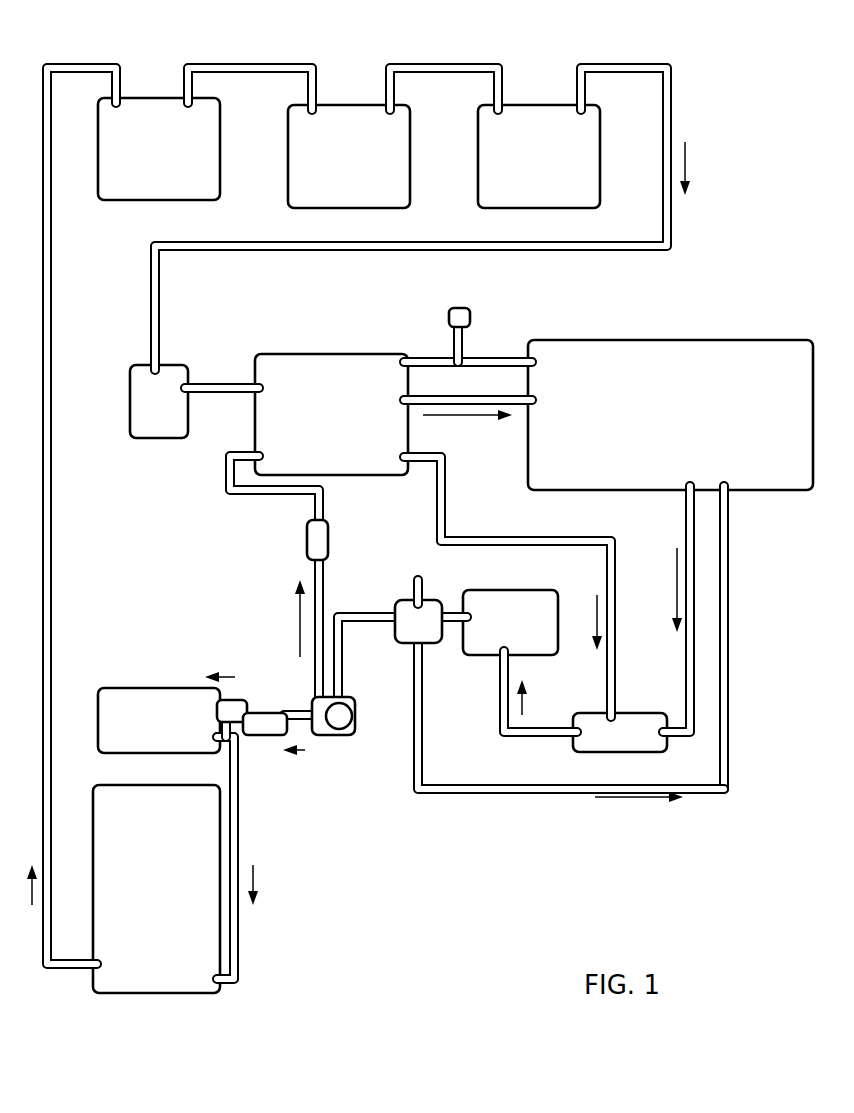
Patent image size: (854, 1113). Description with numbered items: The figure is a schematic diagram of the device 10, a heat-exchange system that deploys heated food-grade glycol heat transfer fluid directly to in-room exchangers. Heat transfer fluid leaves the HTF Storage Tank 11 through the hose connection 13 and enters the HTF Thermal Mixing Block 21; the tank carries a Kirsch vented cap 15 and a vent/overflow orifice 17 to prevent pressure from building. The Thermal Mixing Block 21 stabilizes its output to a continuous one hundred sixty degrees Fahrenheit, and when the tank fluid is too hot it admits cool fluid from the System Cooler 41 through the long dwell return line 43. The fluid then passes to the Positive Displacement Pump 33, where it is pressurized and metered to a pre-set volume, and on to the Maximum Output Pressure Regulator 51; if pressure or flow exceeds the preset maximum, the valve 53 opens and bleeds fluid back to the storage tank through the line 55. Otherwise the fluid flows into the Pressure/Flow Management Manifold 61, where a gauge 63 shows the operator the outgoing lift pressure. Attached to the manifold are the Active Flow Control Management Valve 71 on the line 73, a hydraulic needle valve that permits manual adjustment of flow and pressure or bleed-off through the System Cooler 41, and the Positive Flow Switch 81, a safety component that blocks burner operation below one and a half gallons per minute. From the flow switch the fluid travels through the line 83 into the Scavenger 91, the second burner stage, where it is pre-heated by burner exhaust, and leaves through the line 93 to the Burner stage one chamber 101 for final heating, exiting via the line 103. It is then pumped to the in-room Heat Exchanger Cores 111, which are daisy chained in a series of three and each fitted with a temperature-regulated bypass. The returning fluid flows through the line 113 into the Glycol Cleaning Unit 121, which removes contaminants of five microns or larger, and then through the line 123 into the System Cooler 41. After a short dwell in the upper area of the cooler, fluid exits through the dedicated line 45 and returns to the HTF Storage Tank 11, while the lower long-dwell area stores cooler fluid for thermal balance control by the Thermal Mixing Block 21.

The device 10 is at (490, 933).
The HTF Storage Tank 11 is at (698, 362).
The hose connection 13 is at (687, 512).
The Kirsch vented cap 15 is at (470, 310).
The vent/overflow orifice 17 is at (485, 362).
The HTF Thermal Mixing Block 21 is at (607, 733).
The Positive Displacement Pump 33 is at (528, 607).
The System Cooler 41 is at (342, 388).
The long dwell return line 43 is at (440, 512).
The dedicated line 45 is at (465, 393).
The Maximum Output Pressure Regulator 51 is at (418, 575).
The valve 53 is at (410, 617).
The line 55 is at (480, 785).
The Pressure/Flow Management Manifold 61 is at (323, 737).
The gauge 63 is at (338, 718).
The Active Flow Control Management Valve 71 is at (315, 542).
The line 73 is at (223, 475).
The Positive Flow Switch 81 is at (270, 727).
The line 83 is at (245, 700).
The Scavenger 91 is at (168, 725).
The line 93 is at (238, 923).
The Burner stage one chamber 101 is at (158, 972).
The line 103 is at (65, 965).
The in-room Heat Exchanger Cores 111 is at (155, 127).
The line 113 is at (515, 245).
The Glycol Cleaning Unit 121 is at (162, 413).
The line 123 is at (210, 387).